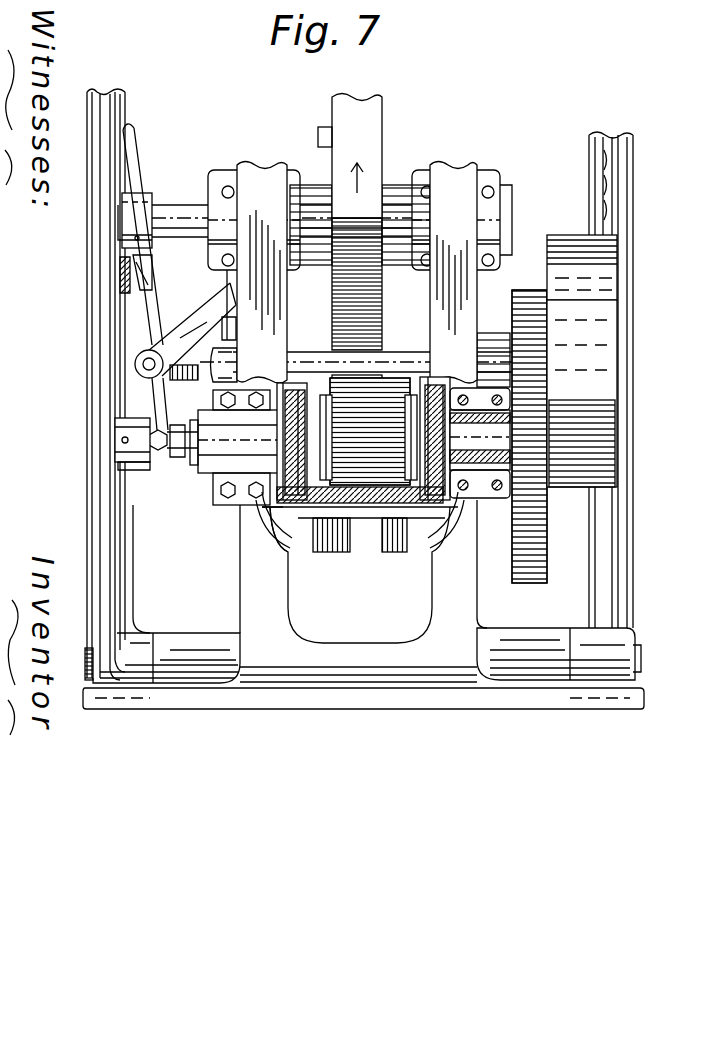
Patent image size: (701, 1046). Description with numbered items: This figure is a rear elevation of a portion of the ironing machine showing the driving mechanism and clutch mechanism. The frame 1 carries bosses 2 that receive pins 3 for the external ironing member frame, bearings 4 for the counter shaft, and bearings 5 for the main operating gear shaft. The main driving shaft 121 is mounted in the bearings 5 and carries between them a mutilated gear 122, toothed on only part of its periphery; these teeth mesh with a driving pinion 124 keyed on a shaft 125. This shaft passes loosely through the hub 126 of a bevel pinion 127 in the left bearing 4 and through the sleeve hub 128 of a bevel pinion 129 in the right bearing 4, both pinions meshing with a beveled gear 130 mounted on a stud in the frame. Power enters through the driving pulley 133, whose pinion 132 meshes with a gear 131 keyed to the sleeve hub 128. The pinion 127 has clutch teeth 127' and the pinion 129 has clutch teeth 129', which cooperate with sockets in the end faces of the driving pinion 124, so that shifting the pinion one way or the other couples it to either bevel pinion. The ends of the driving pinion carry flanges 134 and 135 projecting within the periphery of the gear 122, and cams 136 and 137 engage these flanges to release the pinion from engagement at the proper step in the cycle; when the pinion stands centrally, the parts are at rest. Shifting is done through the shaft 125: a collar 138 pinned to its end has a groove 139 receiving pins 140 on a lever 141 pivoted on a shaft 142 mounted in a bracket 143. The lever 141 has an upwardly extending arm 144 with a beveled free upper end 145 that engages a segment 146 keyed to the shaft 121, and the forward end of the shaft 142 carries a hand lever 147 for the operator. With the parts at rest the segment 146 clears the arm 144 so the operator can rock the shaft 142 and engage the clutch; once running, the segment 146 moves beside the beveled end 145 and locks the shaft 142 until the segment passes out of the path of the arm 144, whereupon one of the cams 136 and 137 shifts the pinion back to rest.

The frame 1 is at (445, 694).
The bosses 2 is at (170, 642).
The pins 3 is at (641, 661).
The bearings 4 is at (210, 507).
The bearings 5 is at (218, 198).
The main driving shaft 121 is at (178, 215).
The mutilated gear 122 is at (360, 245).
The driving pinion 124 is at (350, 482).
The shaft 125 is at (237, 458).
The hub 126 is at (205, 418).
The bevel pinion 127 is at (247, 499).
The clutch teeth 127' is at (264, 540).
The sleeve hub 128 is at (470, 500).
The bevel pinion 129 is at (402, 562).
The clutch teeth 129' is at (357, 547).
The beveled gear 130 is at (360, 500).
The gear 131 is at (535, 531).
The pinion 132 is at (527, 364).
The driving pulley 133 is at (612, 389).
The flange 134 is at (409, 396).
The flange 135 is at (326, 398).
The cam 136 is at (372, 368).
The cam 137 is at (330, 160).
The collar 138 is at (140, 466).
The groove 139 is at (168, 458).
The pins 140 is at (120, 437).
The lever 141 is at (152, 412).
The shaft 142 is at (147, 378).
The bracket 143 is at (141, 354).
The arm 144 is at (143, 300).
The beveled free upper end 145 is at (133, 265).
The segment 146 is at (152, 243).
The lever 147 is at (130, 188).